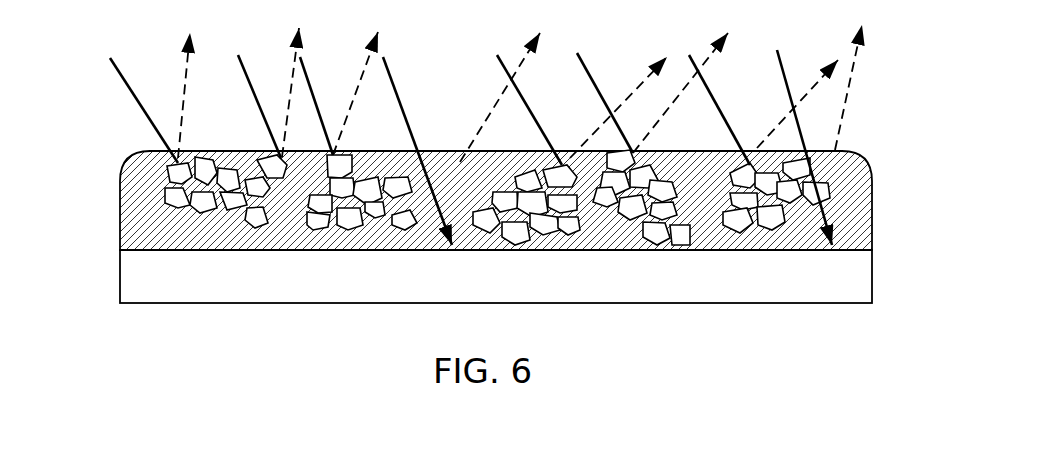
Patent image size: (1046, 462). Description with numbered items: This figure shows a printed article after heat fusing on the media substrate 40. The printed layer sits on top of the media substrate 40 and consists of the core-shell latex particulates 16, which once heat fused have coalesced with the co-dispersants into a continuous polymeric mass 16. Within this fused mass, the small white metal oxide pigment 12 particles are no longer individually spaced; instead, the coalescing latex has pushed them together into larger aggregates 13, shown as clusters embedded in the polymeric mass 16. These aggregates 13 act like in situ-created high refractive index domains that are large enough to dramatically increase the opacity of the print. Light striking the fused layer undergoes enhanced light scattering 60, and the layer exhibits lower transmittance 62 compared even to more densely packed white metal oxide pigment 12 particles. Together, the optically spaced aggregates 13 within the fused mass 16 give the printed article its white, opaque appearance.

The core-shell latex particulates 16 is at (148, 168).
The white metal oxide pigment 12 is at (177, 173).
The larger aggregates 13 is at (197, 222).
The media substrate 40 is at (482, 288).
The enhanced light scattering 60 is at (500, 95).
The lower transmittance 62 is at (856, 168).